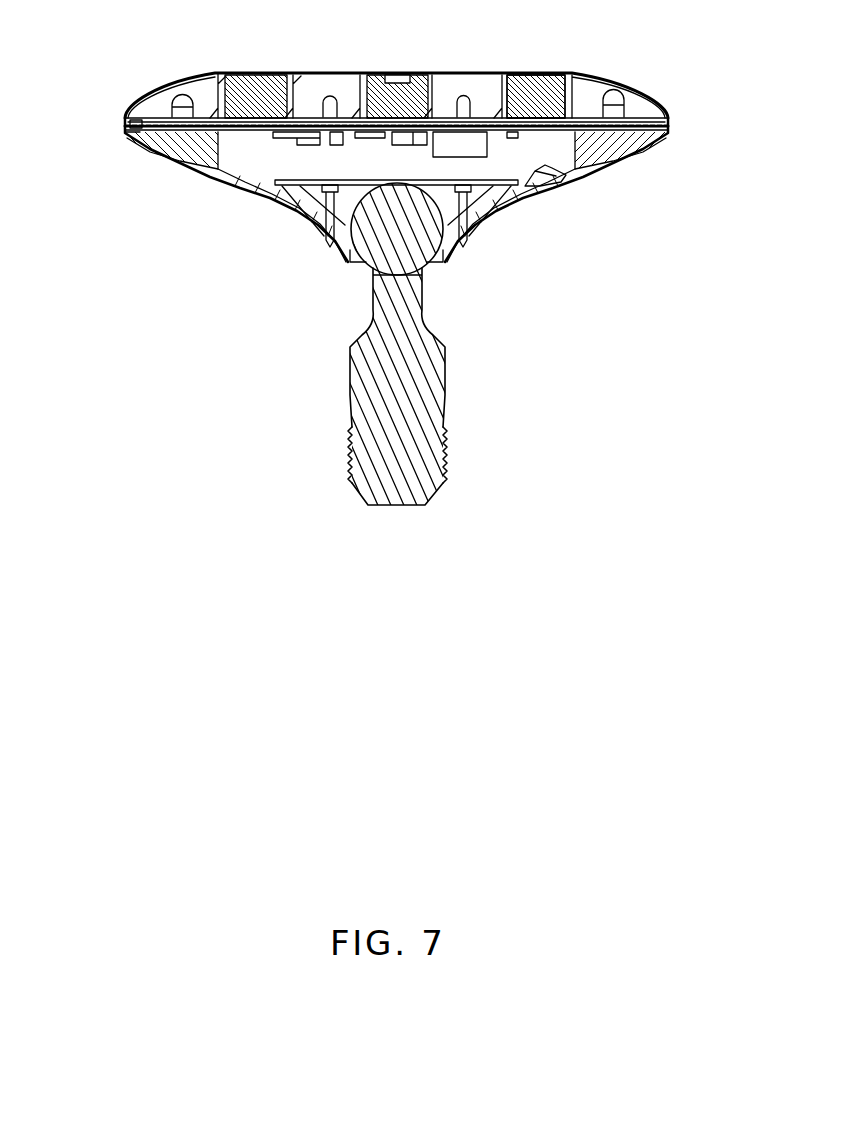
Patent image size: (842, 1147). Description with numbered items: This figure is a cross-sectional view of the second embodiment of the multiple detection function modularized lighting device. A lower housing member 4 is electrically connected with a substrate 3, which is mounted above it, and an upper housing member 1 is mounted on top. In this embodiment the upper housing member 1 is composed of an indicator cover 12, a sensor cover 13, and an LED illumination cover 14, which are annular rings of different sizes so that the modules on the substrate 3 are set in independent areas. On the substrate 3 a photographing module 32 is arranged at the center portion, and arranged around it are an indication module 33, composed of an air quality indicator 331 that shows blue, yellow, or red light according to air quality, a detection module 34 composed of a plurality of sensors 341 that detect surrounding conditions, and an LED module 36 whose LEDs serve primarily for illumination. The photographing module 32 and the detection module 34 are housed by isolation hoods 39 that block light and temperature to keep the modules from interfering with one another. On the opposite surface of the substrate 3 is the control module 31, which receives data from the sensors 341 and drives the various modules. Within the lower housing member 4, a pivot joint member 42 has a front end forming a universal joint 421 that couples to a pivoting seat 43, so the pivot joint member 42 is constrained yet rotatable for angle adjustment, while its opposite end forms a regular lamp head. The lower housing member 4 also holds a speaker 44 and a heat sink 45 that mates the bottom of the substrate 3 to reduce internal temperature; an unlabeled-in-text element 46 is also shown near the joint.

The upper housing member 1 is at (113, 106).
The substrate 3 is at (672, 122).
The lower housing member 4 is at (203, 190).
The indicator cover 12 is at (442, 75).
The sensor cover 13 is at (517, 75).
The LED illumination cover 14 is at (657, 100).
The control module 31 is at (462, 160).
The photographing module 32 is at (413, 77).
The indication module 33 is at (346, 78).
The air quality indicator 331 is at (330, 97).
The detection module 34 is at (570, 65).
The sensors 341 is at (574, 91).
The LED module 36 is at (172, 96).
The isolation hoods 39 is at (225, 73).
The pivot joint member 42 is at (443, 382).
The universal joint 421 is at (430, 267).
The pivoting seat 43 is at (297, 190).
The speaker 44 is at (547, 178).
The heat sink 45 is at (627, 142).
The foot 46 is at (357, 265).